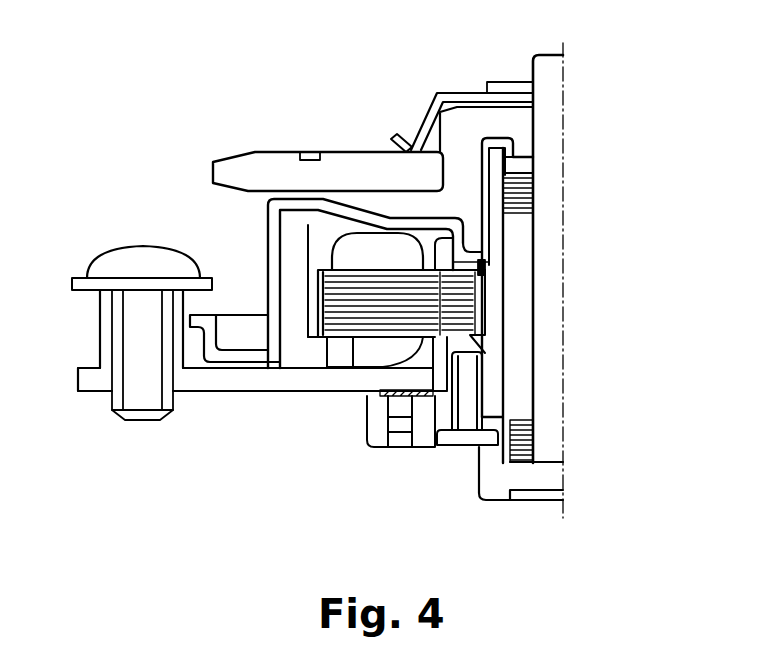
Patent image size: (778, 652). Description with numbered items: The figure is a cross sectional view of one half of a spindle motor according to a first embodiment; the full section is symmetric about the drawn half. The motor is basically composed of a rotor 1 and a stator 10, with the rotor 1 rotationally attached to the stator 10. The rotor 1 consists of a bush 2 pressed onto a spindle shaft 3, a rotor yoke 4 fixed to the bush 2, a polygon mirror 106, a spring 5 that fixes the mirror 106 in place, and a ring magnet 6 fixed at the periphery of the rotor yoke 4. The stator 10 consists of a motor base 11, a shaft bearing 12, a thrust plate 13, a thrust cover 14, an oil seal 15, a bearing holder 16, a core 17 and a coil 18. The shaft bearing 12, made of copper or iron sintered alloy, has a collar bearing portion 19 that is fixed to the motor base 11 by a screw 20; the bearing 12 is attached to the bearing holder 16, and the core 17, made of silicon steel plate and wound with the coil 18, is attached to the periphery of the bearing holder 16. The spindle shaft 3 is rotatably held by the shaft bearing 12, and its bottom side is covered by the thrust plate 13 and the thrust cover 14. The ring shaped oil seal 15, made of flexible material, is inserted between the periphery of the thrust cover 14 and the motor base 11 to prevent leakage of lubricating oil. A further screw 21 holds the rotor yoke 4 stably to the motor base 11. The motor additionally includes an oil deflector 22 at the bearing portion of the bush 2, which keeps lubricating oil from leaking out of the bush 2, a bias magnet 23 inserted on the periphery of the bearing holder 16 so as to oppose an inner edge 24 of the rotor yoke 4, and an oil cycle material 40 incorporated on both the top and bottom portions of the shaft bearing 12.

The rotor 1 is at (247, 272).
The bush 2 is at (477, 115).
The spindle shaft 3 is at (557, 99).
The rotor yoke 4 is at (272, 229).
The spring 5 is at (427, 112).
The ring magnet 6 is at (290, 328).
The stator 10 is at (58, 396).
The motor base 11 is at (198, 392).
The shaft bearing 12 is at (524, 396).
The thrust plate 13 is at (558, 460).
The thrust cover 14 is at (558, 485).
The oil seal 15 is at (410, 398).
The bearing holder 16 is at (495, 327).
The core 17 is at (323, 337).
The coil 18 is at (370, 353).
The collar bearing portion 19 is at (440, 407).
The screw 20 is at (467, 442).
The screw 21 is at (132, 416).
The oil deflector 22 is at (527, 165).
The bias magnet 23 is at (489, 264).
The inner edge 24 is at (462, 244).
The oil cycle material 40 is at (525, 200).
The polygon mirror 106 is at (340, 150).